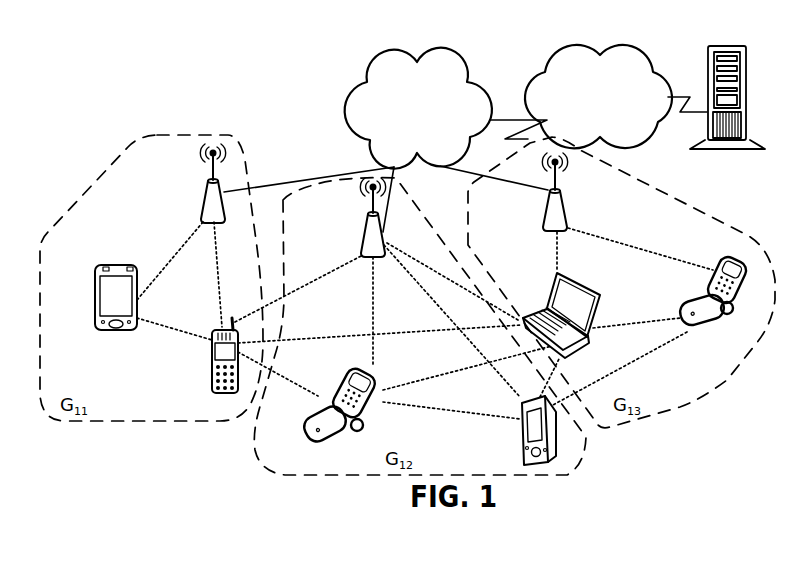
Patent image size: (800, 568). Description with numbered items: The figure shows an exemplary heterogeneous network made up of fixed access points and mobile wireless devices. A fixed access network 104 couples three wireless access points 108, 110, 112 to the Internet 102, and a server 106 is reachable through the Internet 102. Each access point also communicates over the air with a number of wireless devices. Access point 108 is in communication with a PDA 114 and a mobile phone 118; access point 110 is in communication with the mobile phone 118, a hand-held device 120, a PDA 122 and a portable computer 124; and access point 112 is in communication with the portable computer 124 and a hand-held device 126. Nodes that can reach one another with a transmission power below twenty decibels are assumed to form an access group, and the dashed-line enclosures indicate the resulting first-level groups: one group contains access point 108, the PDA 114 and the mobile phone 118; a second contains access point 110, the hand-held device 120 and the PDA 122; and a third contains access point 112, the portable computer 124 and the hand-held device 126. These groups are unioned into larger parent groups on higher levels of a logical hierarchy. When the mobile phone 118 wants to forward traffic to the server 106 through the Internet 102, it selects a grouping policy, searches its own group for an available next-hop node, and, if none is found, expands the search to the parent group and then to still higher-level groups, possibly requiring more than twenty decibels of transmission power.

The Internet 102 is at (616, 121).
The fixed access network 104 is at (434, 146).
The server 106 is at (708, 142).
The wireless access point 108 is at (205, 198).
The wireless access point 110 is at (360, 236).
The wireless access point 112 is at (543, 222).
The PDA 114 is at (95, 311).
The mobile phone 118 is at (213, 393).
The hand-held device 120 is at (304, 443).
The PDA 122 is at (522, 458).
The portable computer 124 is at (547, 296).
The hand-held device 126 is at (693, 330).